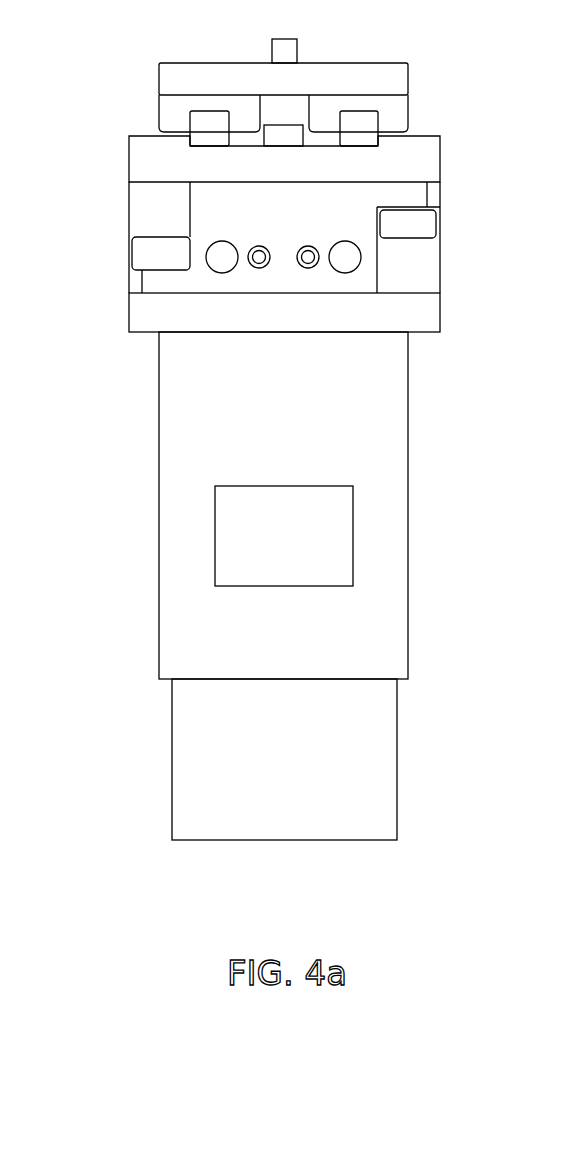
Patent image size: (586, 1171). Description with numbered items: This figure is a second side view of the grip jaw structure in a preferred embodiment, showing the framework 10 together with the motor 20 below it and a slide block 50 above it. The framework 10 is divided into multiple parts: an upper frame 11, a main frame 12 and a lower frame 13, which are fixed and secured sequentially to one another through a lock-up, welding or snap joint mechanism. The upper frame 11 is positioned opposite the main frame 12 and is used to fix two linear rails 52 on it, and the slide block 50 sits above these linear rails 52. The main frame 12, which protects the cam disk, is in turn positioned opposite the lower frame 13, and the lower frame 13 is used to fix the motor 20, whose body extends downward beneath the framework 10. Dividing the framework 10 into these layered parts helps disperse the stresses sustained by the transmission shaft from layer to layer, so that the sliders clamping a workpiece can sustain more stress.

The framework 10 is at (284, 234).
The upper frame 11 is at (157, 167).
The main frame 12 is at (145, 227).
The lower frame 13 is at (143, 318).
The motor 20 is at (405, 515).
The slide block 50 is at (202, 80).
The linear rail 52 is at (200, 117).